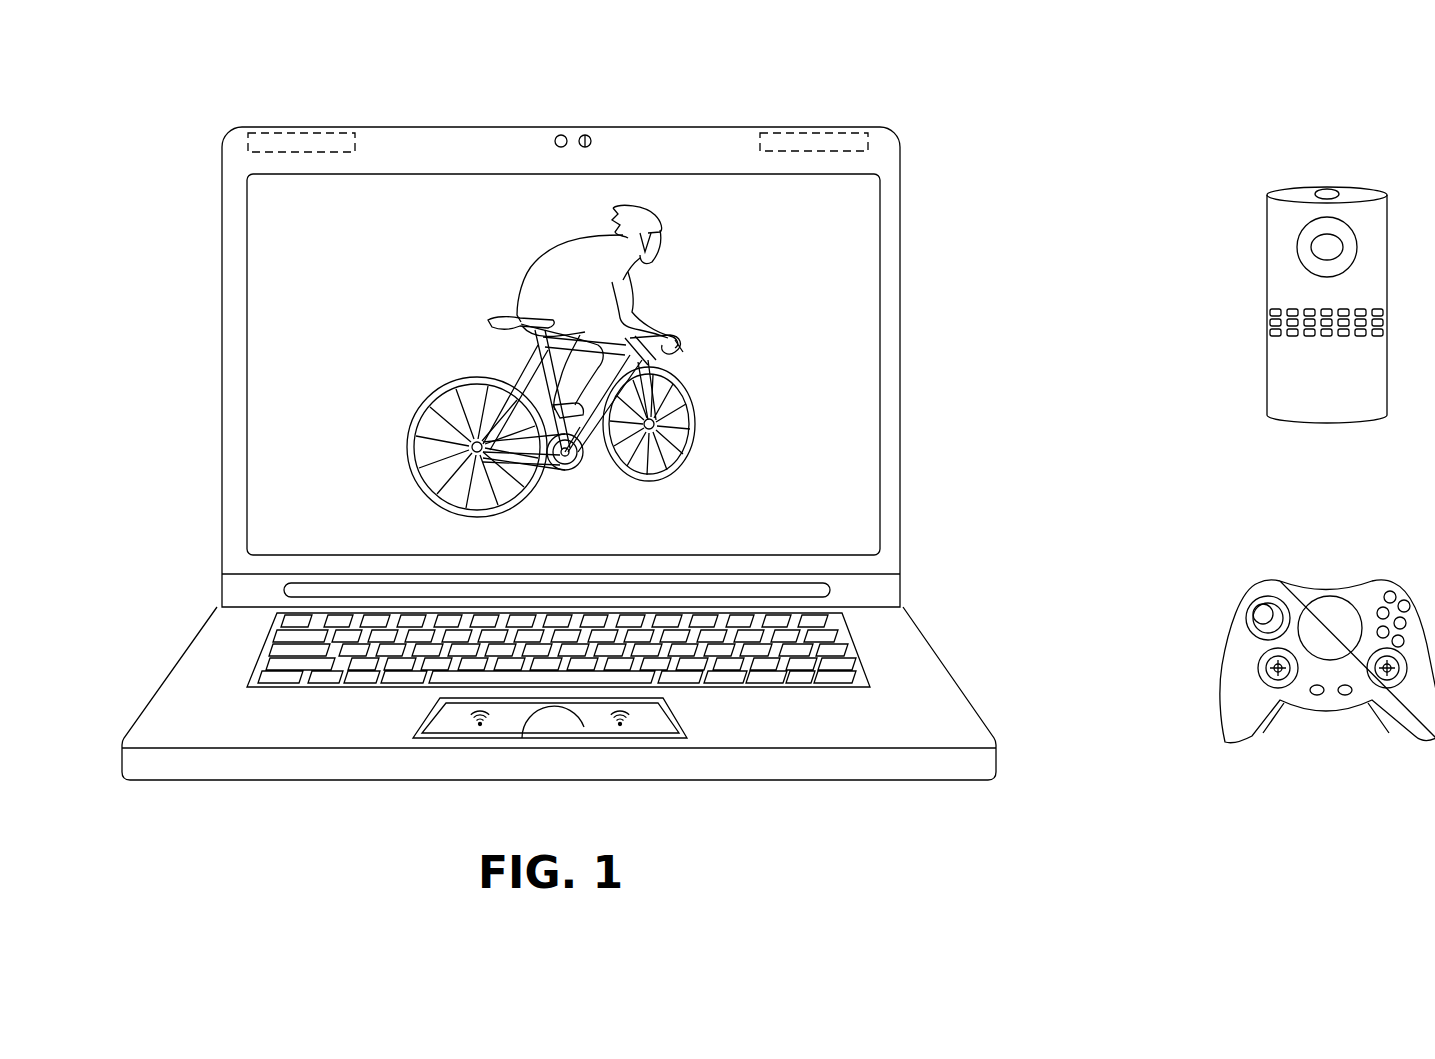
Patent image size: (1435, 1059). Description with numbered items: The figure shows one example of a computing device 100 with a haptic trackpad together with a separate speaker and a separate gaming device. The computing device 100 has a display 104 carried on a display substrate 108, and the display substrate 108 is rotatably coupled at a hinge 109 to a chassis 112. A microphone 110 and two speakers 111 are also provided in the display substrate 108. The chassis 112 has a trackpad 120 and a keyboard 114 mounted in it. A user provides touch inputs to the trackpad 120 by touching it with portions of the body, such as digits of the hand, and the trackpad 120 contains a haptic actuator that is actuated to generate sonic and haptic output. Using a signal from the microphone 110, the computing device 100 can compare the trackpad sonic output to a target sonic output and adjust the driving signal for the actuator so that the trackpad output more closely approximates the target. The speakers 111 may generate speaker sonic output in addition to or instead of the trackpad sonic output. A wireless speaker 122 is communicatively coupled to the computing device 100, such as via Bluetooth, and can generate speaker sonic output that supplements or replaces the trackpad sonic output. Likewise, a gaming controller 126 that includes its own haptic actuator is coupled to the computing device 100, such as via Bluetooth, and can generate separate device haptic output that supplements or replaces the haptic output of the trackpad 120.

The computing device 100 is at (133, 106).
The display 104 is at (808, 258).
The display substrate 108 is at (222, 232).
The hinge 109 is at (922, 582).
The microphone 110 is at (585, 135).
The speakers 111 is at (301, 133).
The chassis 112 is at (987, 727).
The keyboard 114 is at (246, 627).
The trackpad 120 is at (522, 738).
The wireless speaker 122 is at (1364, 190).
The gaming controller 126 is at (1322, 588).